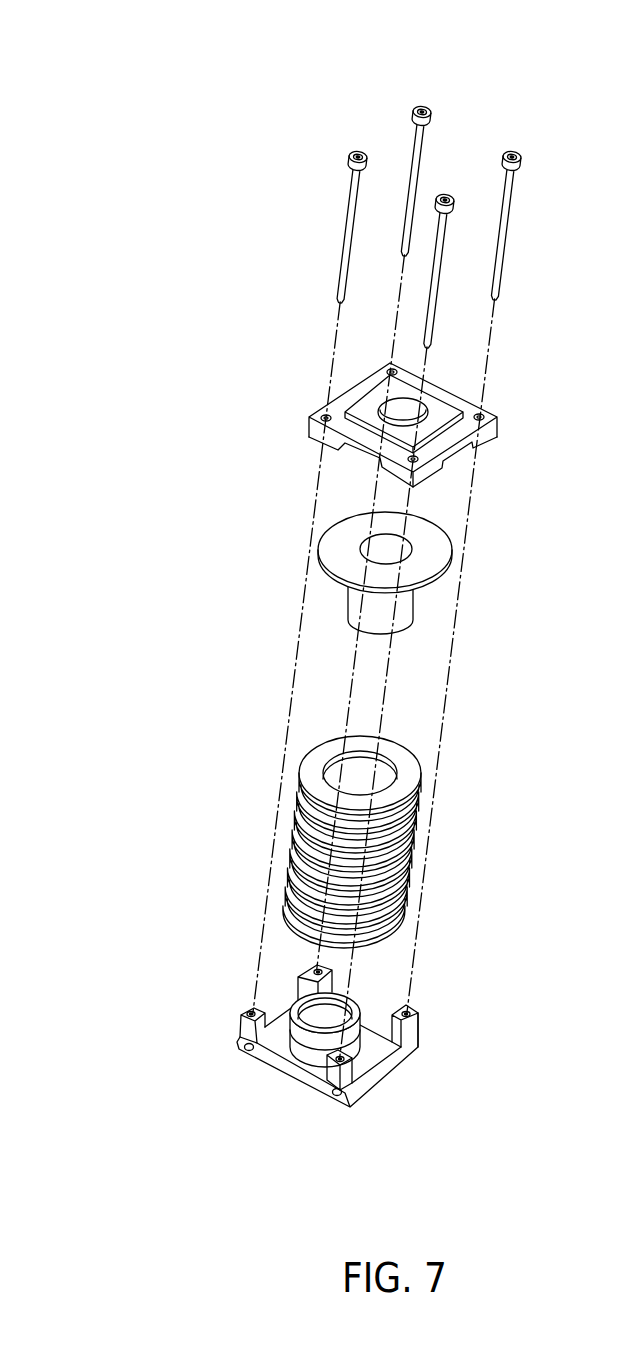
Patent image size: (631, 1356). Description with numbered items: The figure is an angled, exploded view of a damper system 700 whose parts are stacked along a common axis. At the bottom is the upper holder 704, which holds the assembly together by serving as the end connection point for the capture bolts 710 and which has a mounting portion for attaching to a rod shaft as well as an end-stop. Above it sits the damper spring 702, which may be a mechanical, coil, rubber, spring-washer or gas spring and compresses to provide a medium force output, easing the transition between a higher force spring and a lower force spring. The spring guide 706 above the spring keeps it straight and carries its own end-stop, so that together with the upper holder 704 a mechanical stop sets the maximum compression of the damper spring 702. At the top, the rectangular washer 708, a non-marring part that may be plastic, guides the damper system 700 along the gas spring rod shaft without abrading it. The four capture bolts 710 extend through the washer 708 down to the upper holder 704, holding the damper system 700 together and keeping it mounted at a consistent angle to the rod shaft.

The damper system 700 is at (154, 84).
The damper spring 702 is at (300, 827).
The upper holder 704 is at (240, 1017).
The spring guide 706 is at (357, 599).
The washer 708 is at (345, 418).
The capture bolts 710 is at (347, 189).